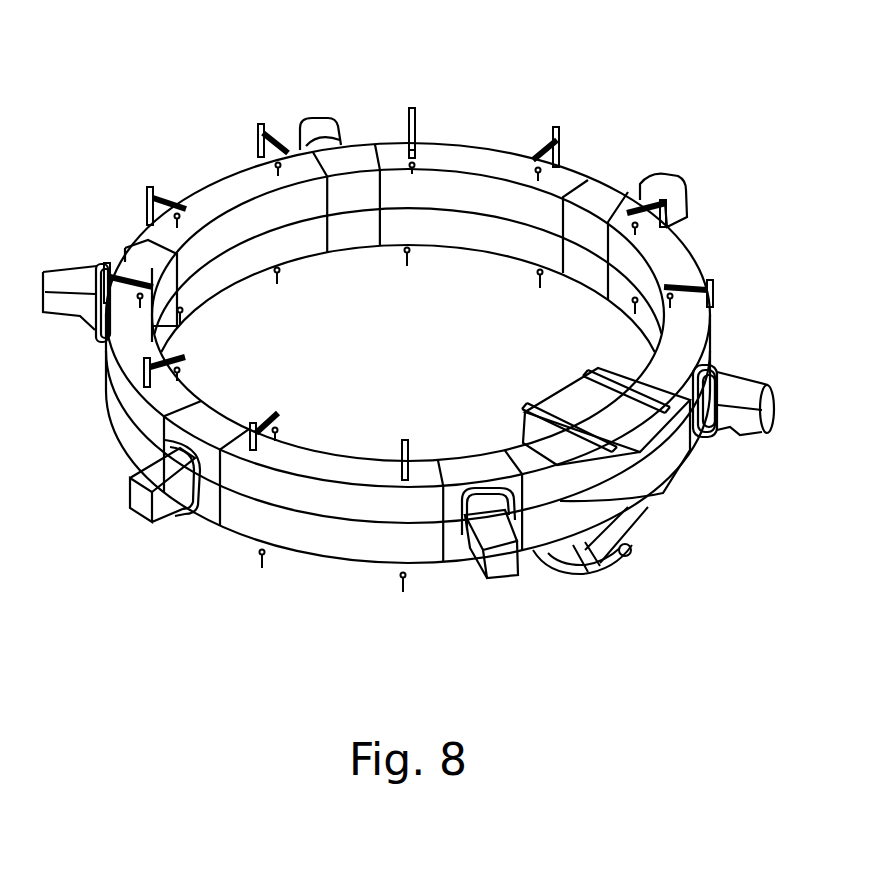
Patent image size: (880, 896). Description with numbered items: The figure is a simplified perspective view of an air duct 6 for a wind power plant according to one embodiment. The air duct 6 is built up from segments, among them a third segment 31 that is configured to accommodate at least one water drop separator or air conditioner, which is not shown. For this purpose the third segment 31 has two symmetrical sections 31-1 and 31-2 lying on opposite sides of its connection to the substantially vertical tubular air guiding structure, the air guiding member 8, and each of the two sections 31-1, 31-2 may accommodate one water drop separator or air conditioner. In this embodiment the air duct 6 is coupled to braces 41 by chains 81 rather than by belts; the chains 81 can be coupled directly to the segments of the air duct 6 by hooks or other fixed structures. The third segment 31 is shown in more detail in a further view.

The air duct 6 is at (489, 84).
The braces 41 is at (266, 124).
The chains 81 is at (257, 152).
The third segment 31 is at (546, 395).
The first symmetrical section 31-1 is at (588, 368).
The second symmetrical section 31-2 is at (522, 404).
The air guiding member 8 is at (590, 585).